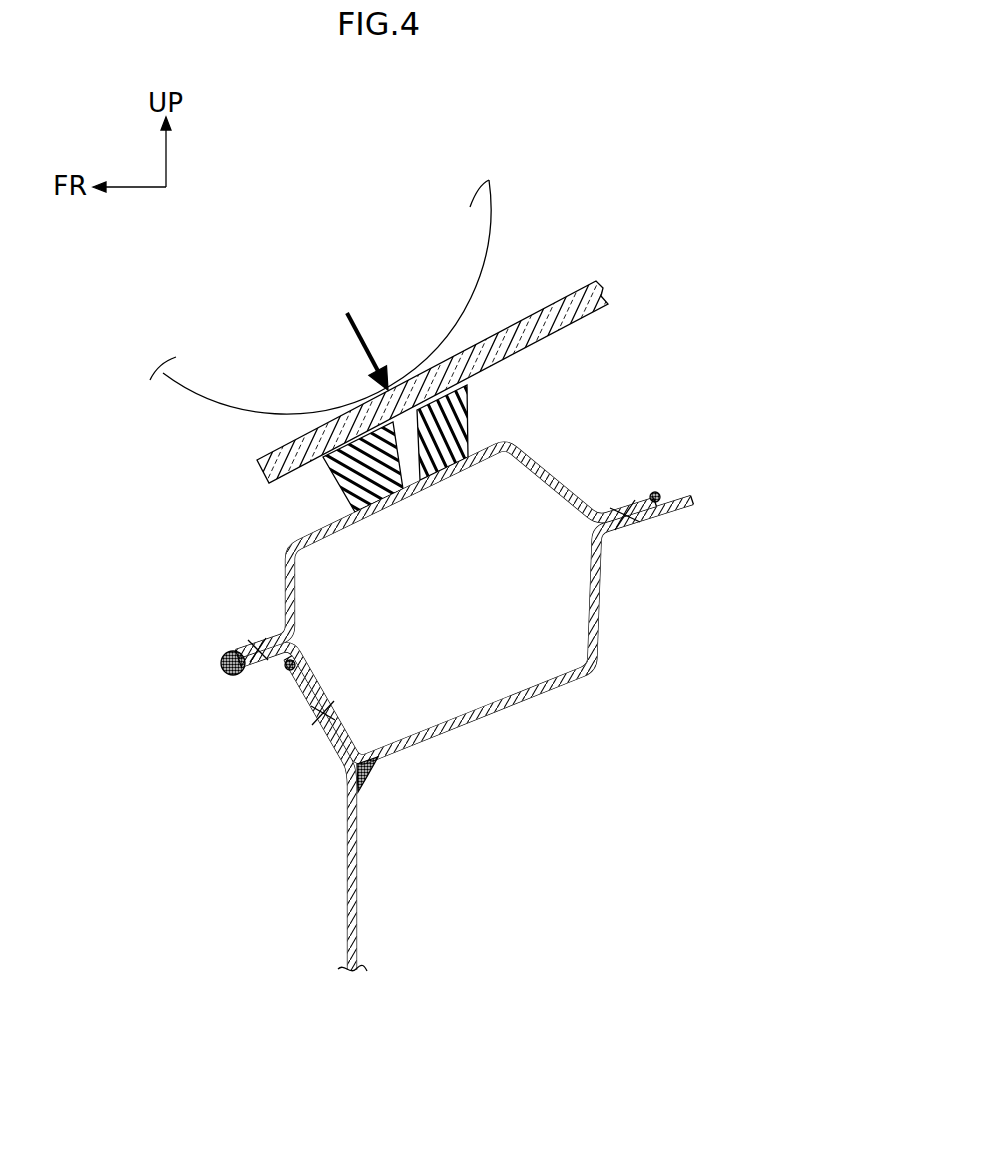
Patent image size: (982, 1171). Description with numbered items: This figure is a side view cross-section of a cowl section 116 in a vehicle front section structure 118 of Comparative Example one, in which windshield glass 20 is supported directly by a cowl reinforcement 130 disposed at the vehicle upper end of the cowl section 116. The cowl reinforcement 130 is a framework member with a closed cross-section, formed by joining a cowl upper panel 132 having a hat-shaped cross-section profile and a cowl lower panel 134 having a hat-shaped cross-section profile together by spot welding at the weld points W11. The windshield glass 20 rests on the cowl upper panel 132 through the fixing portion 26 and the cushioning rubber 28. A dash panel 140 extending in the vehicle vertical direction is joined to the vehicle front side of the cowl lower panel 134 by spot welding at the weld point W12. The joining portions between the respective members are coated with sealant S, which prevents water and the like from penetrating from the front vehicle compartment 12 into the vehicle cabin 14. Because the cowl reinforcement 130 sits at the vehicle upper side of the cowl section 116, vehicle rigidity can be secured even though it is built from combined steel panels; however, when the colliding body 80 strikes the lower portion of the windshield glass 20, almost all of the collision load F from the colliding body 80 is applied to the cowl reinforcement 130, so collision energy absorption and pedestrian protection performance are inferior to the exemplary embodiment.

The front vehicle compartment 12 is at (203, 838).
The vehicle cabin 14 is at (683, 838).
The windshield glass 20 is at (510, 327).
The fixing portion 26 is at (350, 483).
The cushioning rubber 28 is at (470, 432).
The colliding body 80 is at (208, 383).
The cowl section 116 is at (532, 560).
The vehicle front section structure 118 is at (488, 445).
The cowl reinforcement 130 is at (629, 488).
The cowl upper panel 132 is at (570, 494).
The cowl lower panel 134 is at (570, 680).
The dash panel 140 is at (357, 913).
The collision load F is at (366, 347).
The sealant S is at (232, 675).
The weld points W11 is at (260, 650).
The weld point W12 is at (322, 713).